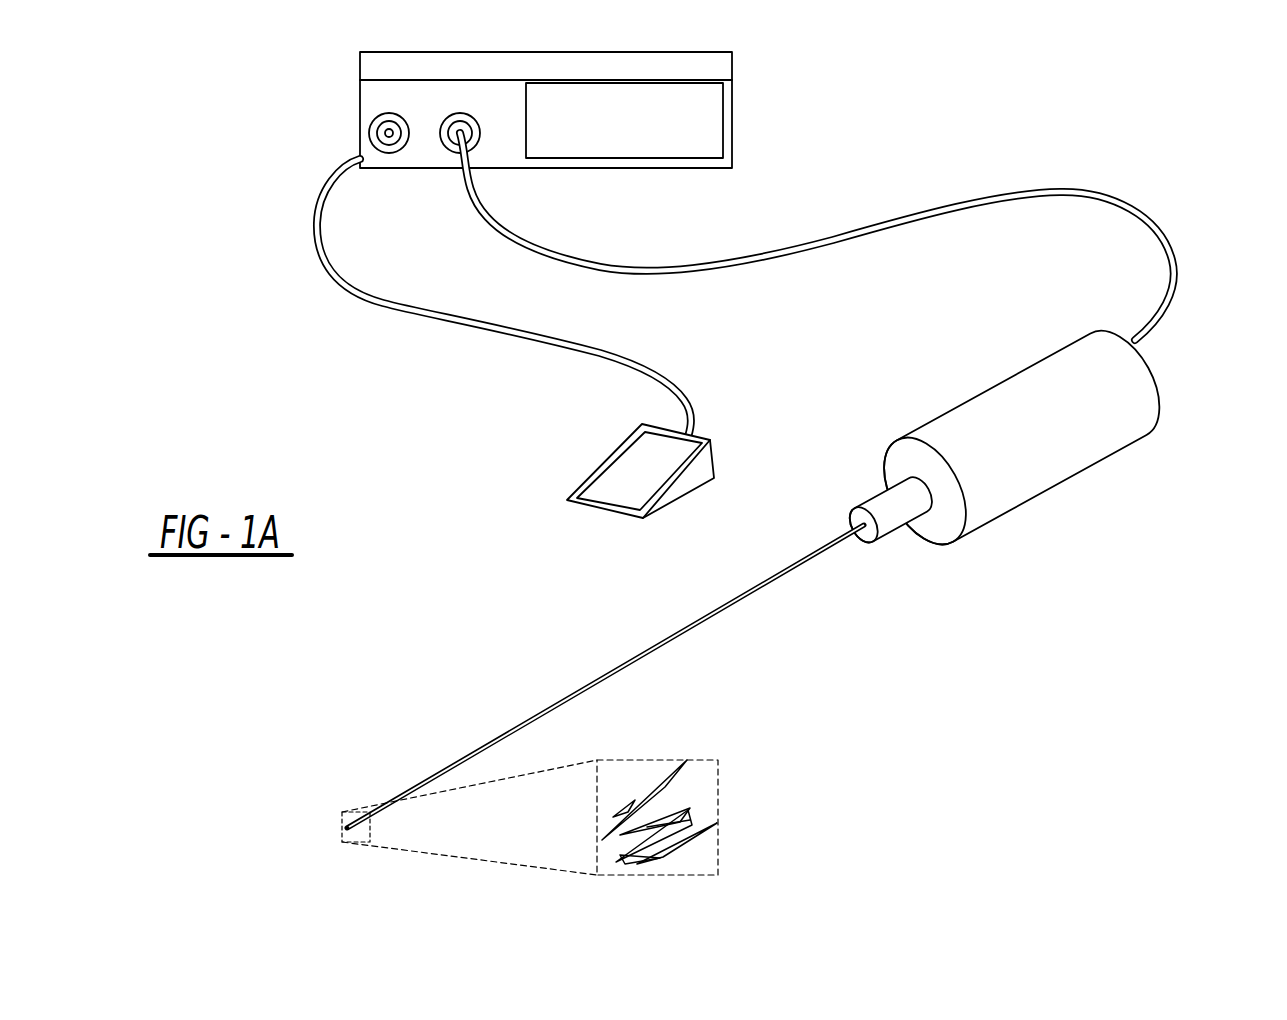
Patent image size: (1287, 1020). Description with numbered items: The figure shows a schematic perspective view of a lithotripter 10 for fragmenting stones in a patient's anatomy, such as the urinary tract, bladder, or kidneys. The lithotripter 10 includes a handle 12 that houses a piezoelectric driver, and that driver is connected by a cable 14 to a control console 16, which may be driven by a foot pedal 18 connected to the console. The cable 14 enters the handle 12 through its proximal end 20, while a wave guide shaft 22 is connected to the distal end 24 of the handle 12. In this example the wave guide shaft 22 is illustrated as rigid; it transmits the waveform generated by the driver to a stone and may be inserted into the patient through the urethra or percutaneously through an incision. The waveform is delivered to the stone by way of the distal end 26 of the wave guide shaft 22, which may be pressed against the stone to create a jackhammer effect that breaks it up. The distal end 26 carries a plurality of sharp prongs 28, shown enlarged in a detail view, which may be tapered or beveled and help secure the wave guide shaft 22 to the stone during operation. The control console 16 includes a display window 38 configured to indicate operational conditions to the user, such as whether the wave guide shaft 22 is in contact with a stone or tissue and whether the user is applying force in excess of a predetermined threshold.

The lithotripter 10 is at (1160, 125).
The handle 12 is at (767, 595).
The cable 14 is at (858, 237).
The control console 16 is at (599, 135).
The foot pedal 18 is at (637, 468).
The proximal end 20 is at (1163, 432).
The wave guide shaft 22 is at (700, 628).
The distal end 24 is at (937, 574).
The distal end 26 is at (345, 796).
The sharp prongs 28 is at (615, 818).
The display window 38 is at (657, 152).